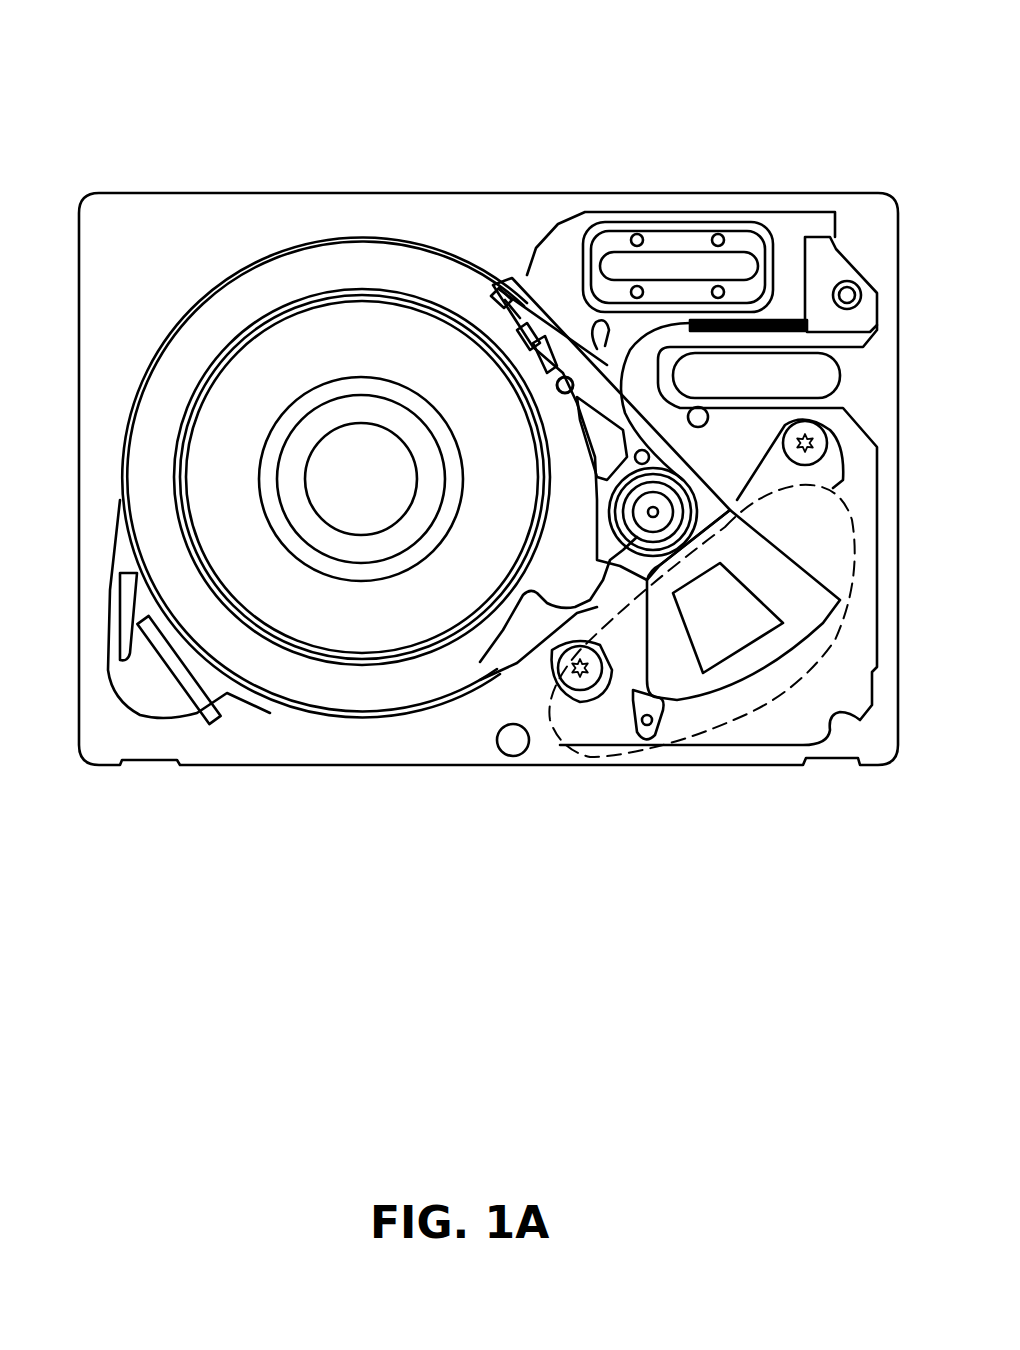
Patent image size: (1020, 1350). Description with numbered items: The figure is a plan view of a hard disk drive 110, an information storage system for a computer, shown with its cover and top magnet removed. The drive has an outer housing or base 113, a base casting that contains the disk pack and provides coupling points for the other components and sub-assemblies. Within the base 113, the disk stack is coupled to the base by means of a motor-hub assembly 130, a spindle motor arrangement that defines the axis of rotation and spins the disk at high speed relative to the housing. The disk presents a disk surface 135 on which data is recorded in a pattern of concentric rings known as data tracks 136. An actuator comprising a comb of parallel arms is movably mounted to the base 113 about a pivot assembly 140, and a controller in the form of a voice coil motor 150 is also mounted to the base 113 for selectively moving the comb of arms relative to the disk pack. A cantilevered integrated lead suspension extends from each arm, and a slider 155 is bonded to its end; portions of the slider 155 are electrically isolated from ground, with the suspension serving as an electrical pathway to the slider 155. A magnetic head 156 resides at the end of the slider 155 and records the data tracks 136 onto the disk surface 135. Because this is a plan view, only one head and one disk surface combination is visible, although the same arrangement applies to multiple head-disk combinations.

The hard disk drive 110 is at (168, 118).
The base 113 is at (103, 432).
The motor-hub assembly 130 is at (363, 472).
The disk surface 135 is at (286, 290).
The data tracks 136 is at (188, 543).
The pivot assembly 140 is at (613, 537).
The voice coil motor 150 is at (730, 703).
The slider 155 is at (503, 288).
The magnetic head 156 is at (490, 285).